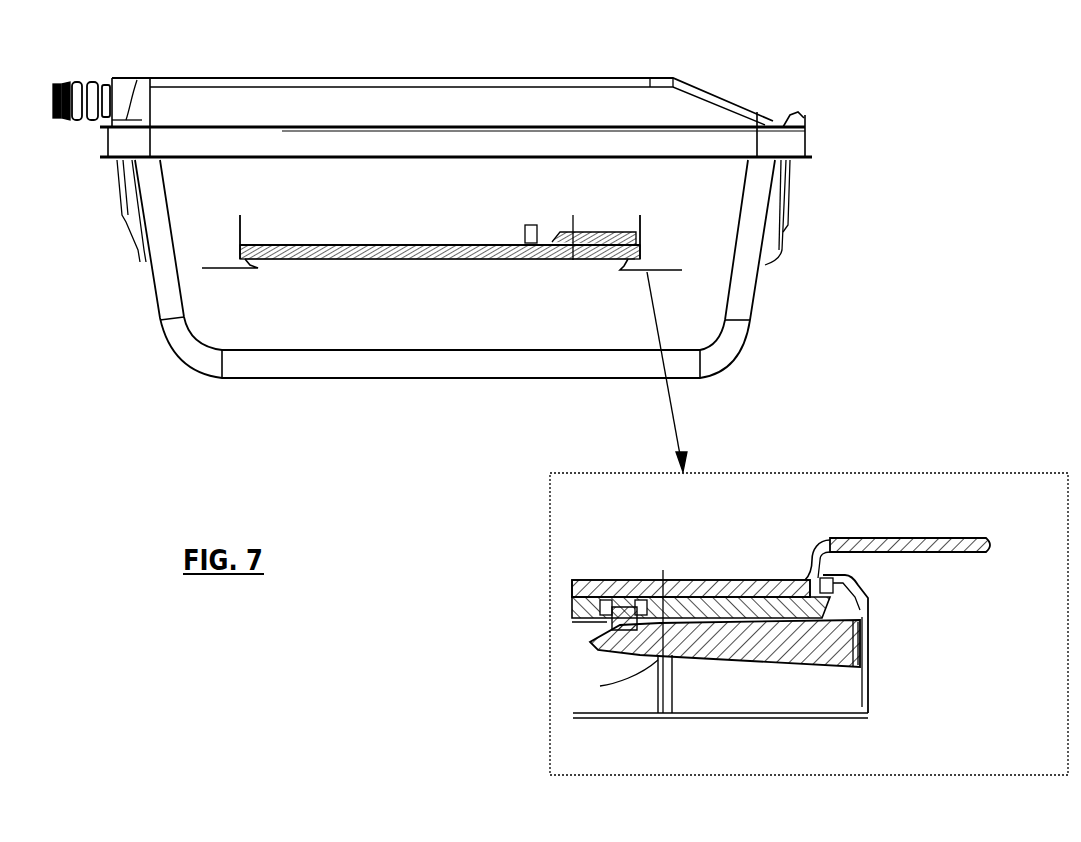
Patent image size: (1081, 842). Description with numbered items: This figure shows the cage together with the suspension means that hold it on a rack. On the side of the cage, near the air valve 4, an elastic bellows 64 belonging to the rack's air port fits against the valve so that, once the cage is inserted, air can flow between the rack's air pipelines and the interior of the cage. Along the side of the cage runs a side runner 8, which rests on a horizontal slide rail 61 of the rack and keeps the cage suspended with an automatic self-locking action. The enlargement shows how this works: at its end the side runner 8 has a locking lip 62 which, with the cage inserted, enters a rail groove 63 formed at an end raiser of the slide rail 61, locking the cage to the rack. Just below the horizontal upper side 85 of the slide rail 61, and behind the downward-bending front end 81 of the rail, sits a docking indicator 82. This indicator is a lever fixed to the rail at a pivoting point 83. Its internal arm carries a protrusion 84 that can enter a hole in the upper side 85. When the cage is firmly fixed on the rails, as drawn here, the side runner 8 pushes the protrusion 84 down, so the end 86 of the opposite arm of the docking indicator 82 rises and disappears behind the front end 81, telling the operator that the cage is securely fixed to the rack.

The air outlet valve 4 is at (133, 87).
The elastic bellows 64 is at (80, 82).
The side runner 8 is at (458, 240).
The slide rail 61 is at (353, 263).
The locking lip 62 is at (807, 565).
The horizontal upper side 85 is at (705, 607).
The rail groove 63 is at (838, 582).
The front end 81 is at (873, 672).
The docking indicator 82 is at (820, 663).
The pivoting point 83 is at (663, 650).
The protrusion 84 is at (610, 618).
The end 86 is at (853, 663).